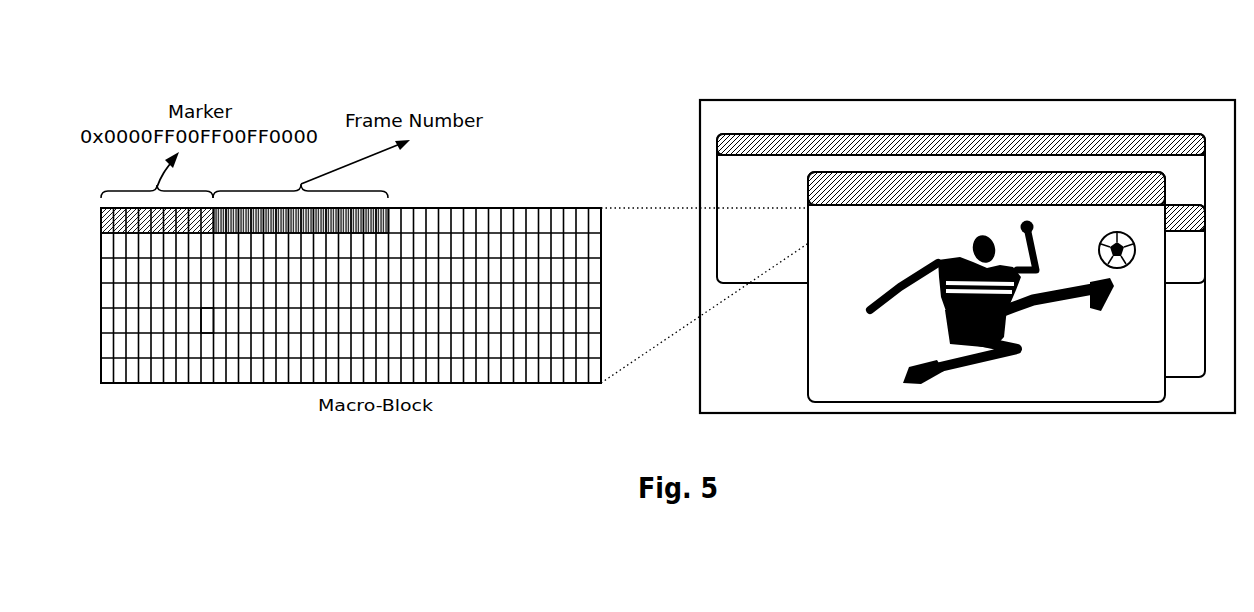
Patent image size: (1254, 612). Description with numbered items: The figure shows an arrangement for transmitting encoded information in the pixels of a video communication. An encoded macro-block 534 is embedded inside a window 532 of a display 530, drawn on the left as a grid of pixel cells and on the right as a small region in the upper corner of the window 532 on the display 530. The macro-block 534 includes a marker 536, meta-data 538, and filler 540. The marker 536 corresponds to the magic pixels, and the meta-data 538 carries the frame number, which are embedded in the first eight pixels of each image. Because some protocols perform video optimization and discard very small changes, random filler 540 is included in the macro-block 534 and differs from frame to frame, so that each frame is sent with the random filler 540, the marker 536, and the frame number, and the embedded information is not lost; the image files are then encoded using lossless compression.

The display 530 is at (1038, 100).
The window 532 is at (1088, 172).
The encoded macro-block 534 is at (543, 384).
The marker 536 is at (160, 262).
The meta-data 538 is at (298, 262).
The filler 540 is at (213, 338).